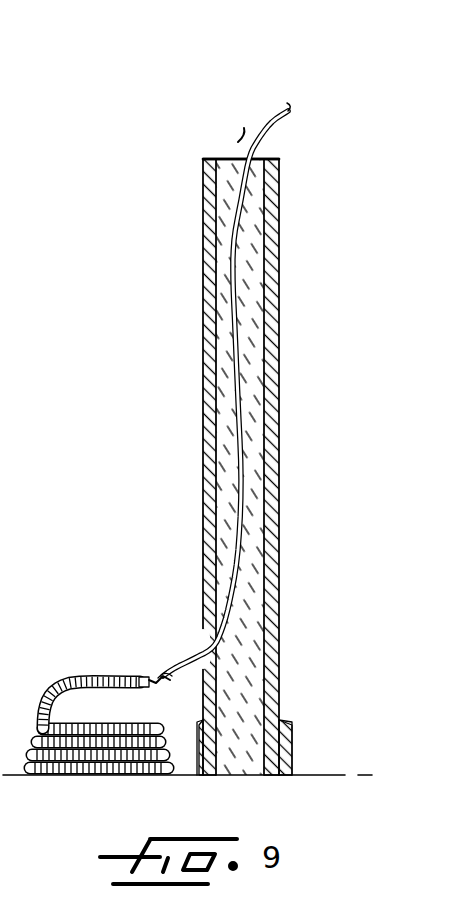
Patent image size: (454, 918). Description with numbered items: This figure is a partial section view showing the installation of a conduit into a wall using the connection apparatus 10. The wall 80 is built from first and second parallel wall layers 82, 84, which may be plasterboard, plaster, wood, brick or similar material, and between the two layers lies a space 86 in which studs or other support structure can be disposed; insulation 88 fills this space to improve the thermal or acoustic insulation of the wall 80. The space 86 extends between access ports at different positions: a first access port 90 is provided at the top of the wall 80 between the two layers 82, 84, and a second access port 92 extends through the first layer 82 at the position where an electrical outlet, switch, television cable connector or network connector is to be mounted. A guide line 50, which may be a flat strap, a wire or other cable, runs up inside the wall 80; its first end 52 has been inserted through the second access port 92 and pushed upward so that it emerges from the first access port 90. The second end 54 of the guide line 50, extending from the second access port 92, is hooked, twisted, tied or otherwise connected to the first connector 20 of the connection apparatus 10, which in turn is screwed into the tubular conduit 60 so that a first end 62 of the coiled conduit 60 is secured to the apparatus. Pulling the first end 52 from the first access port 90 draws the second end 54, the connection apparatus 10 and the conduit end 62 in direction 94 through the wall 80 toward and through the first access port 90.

The connection apparatus 10 is at (134, 669).
The first connector 20 is at (148, 673).
The guide line 50 is at (240, 341).
The first end of the guide line 52 is at (291, 112).
The second end of the guide line 54 is at (152, 723).
The tubular conduit 60 is at (66, 764).
The first end of the conduit 62 is at (112, 681).
The wall 80 is at (218, 467).
The first wall layer 82 is at (205, 292).
The second wall layer 84 is at (280, 453).
The space 86 is at (252, 637).
The insulation 88 is at (258, 587).
The first access port 90 is at (210, 150).
The second access port 92 is at (207, 632).
The direction 94 is at (270, 107).